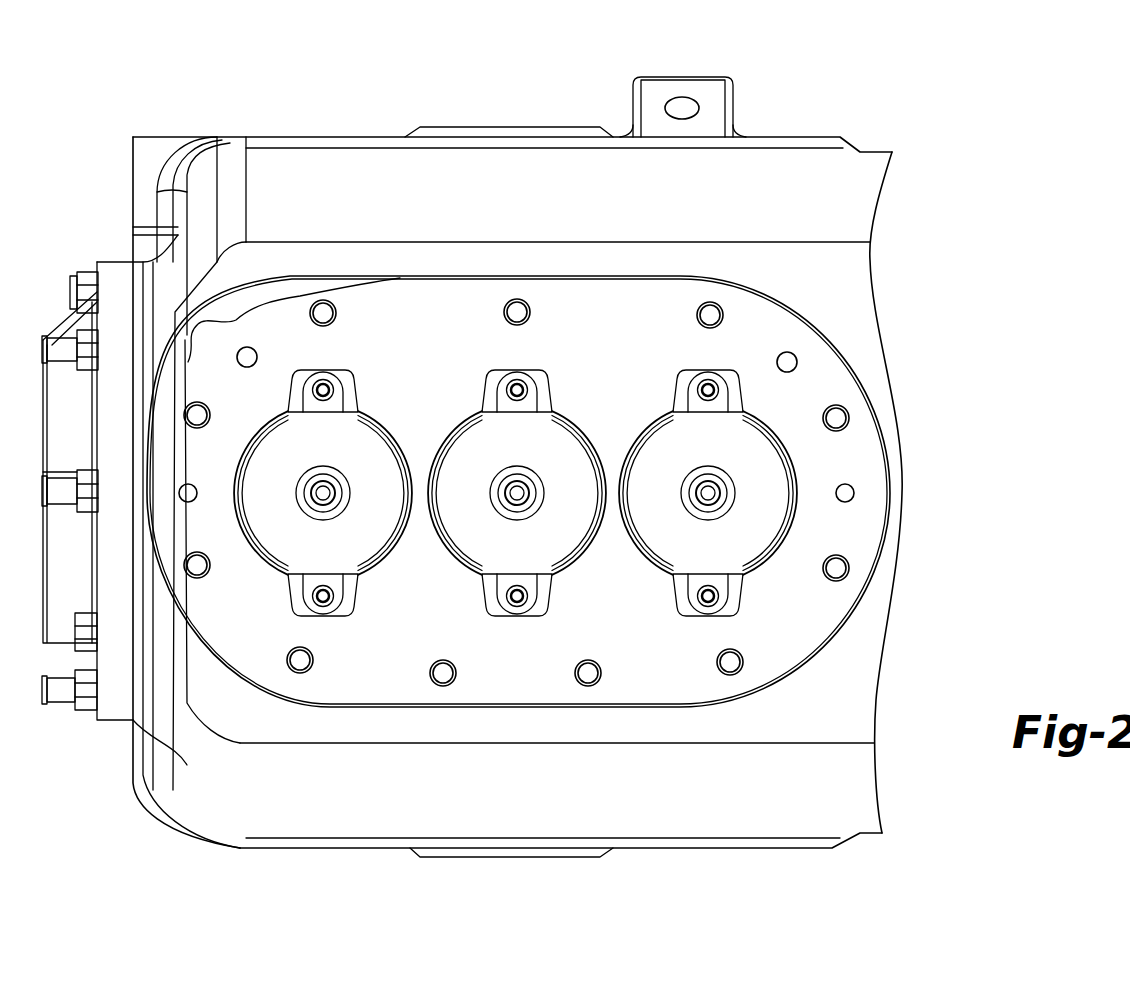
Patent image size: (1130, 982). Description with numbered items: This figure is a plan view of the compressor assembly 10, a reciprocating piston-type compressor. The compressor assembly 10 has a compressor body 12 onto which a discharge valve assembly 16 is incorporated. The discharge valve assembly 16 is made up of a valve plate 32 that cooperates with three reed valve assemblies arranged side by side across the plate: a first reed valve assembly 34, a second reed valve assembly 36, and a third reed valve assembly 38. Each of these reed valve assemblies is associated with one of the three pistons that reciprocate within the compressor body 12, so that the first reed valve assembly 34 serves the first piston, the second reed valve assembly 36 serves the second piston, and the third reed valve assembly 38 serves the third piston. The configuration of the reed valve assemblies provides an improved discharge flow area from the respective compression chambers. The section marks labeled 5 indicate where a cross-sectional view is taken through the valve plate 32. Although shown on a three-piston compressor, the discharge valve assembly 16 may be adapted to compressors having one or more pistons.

The compressor assembly 10 is at (243, 82).
The compressor body 12 is at (861, 213).
The discharge valve assembly 16 is at (840, 296).
The valve plate 32 is at (860, 437).
The first reed valve assembly 34 is at (370, 380).
The second reed valve assembly 36 is at (570, 396).
The third reed valve assembly 38 is at (655, 398).
The section line 5 is at (236, 350).